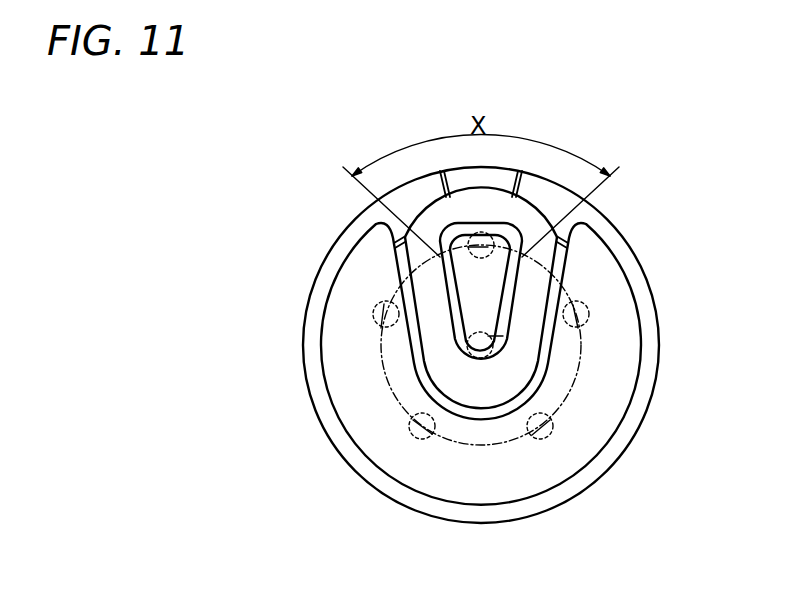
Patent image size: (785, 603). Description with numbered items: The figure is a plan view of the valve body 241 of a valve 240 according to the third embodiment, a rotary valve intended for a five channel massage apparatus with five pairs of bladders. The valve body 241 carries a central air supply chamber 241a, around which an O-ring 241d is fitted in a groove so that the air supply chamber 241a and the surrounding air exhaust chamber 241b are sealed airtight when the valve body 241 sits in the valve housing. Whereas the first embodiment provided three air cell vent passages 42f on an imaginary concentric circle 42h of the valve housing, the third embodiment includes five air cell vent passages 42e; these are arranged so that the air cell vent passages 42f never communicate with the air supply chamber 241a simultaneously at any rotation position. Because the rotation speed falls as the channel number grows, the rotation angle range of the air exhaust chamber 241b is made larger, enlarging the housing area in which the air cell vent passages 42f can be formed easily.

The valve 240 is at (408, 345).
The valve body 241 is at (312, 290).
The air supply chamber 241a is at (490, 290).
The air exhaust chamber 241b is at (381, 445).
The O-ring 241d is at (523, 212).
The air cell vent passages 42e is at (455, 336).
The air cell vent passages 42f is at (466, 247).
The imaginary concentric circle 42h is at (567, 400).